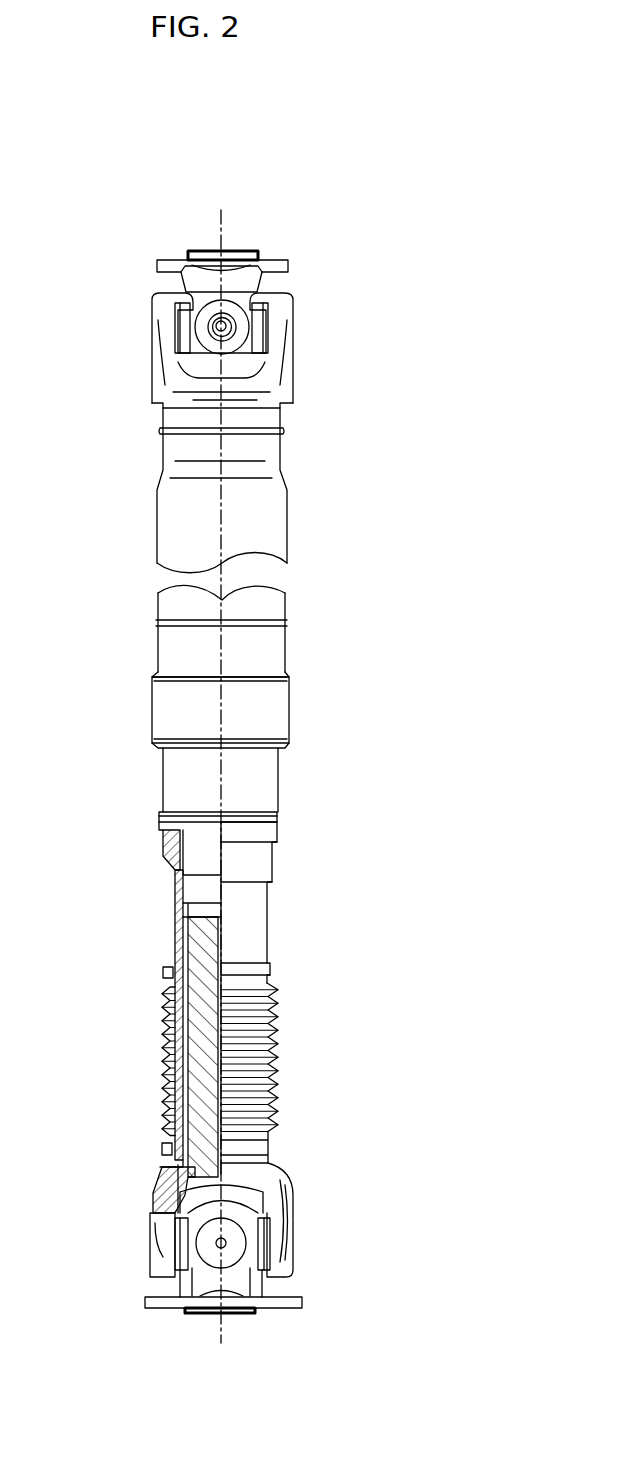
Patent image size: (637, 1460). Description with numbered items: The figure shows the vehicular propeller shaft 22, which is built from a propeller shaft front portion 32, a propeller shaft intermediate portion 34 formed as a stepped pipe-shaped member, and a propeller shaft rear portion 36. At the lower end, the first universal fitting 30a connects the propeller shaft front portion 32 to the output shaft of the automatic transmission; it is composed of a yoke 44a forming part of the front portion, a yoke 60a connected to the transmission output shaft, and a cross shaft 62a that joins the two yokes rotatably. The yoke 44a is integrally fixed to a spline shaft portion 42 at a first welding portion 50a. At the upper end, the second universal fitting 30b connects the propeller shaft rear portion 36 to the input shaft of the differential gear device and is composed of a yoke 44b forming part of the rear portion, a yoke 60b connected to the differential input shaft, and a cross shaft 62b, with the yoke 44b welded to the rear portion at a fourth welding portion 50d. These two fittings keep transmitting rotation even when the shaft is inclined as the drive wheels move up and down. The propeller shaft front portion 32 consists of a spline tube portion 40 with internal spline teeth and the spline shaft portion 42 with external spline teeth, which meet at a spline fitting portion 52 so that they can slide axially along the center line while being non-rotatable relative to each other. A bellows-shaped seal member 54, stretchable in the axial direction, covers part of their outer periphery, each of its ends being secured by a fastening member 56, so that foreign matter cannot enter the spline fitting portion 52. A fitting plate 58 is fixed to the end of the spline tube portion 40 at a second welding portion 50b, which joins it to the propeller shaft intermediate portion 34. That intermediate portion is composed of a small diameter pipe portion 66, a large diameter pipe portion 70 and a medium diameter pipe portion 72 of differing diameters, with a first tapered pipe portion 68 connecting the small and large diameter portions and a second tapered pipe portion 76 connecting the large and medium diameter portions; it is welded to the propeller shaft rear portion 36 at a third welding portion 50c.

The vehicular propeller shaft 22 is at (293, 203).
The first universal fitting 30a is at (357, 1217).
The second universal fitting 30b is at (357, 300).
The propeller shaft front portion 32 is at (335, 920).
The propeller shaft intermediate portion 34 is at (335, 715).
The propeller shaft rear portion 36 is at (335, 518).
The spline tube portion 40 is at (175, 888).
The spline shaft portion 42 is at (183, 1160).
The yoke 44a is at (158, 1265).
The yoke 44b is at (160, 310).
The first welding portion 50a is at (245, 1167).
The second welding portion 50b is at (280, 816).
The third welding portion 50c is at (287, 623).
The fourth welding portion 50d is at (283, 430).
The spline fitting portion 52 is at (178, 937).
The seal member 54 is at (278, 1048).
The fastening member 56 is at (167, 973).
The fitting plate 58 is at (173, 851).
The yoke 60a is at (150, 1307).
The yoke 60b is at (175, 257).
The cross shaft 62a is at (226, 1244).
The cross shaft 62b is at (226, 328).
The small diameter pipe portion 66 is at (172, 783).
The first tapered pipe portion 68 is at (160, 745).
The large diameter pipe portion 70 is at (170, 707).
The medium diameter pipe portion 72 is at (170, 648).
The second tapered pipe portion 76 is at (168, 672).